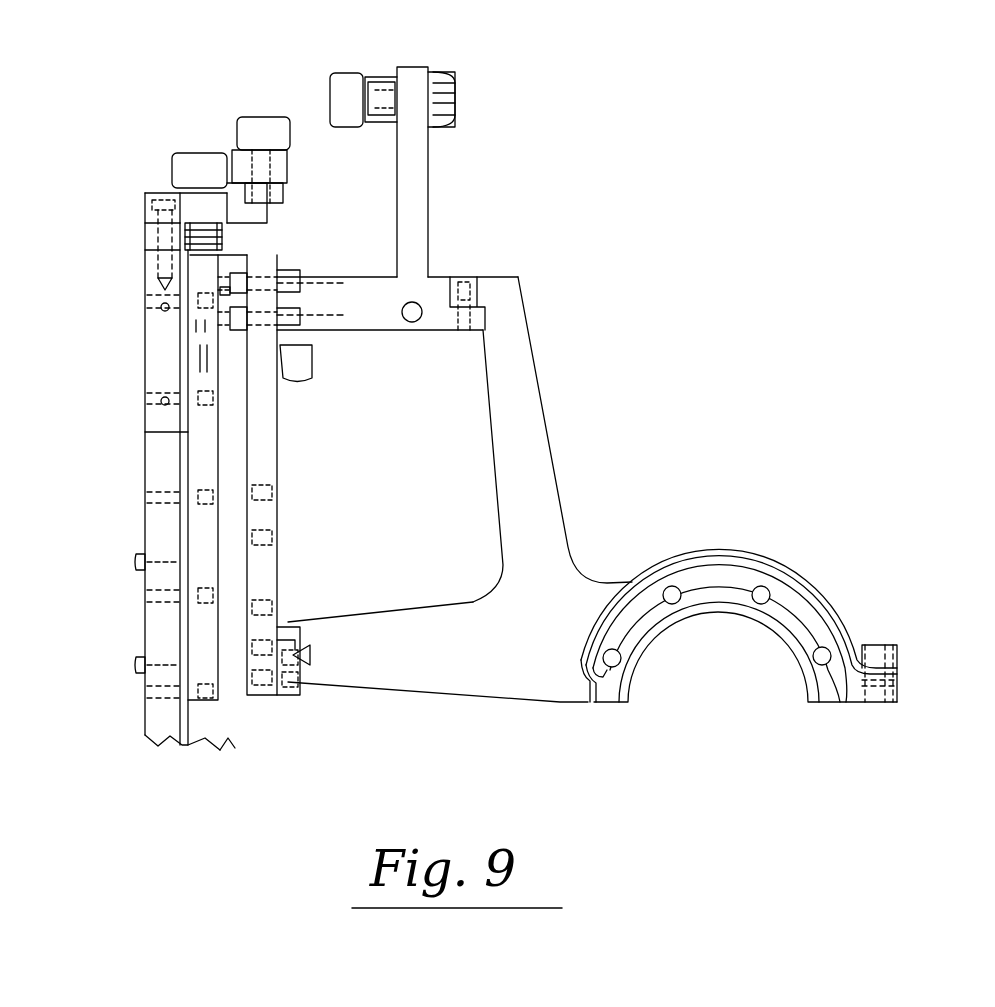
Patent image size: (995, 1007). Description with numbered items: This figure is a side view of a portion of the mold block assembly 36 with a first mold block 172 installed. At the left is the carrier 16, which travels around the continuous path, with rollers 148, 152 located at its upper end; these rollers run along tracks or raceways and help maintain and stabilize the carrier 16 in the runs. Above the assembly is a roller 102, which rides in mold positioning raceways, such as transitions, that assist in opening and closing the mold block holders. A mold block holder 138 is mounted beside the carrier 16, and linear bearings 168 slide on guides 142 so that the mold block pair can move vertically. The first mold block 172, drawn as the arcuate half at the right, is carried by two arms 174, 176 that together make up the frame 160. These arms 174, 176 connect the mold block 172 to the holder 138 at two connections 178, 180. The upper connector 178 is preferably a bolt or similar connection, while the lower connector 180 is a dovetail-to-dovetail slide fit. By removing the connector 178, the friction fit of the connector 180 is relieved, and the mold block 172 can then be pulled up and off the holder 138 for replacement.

The carrier 16 is at (158, 540).
The mold block assembly 36 is at (486, 190).
The roller 102 is at (350, 82).
The mold block holder 138 is at (255, 443).
The guide 142 is at (225, 728).
The roller 148 is at (185, 162).
The roller 152 is at (254, 130).
The frame 160 is at (572, 460).
The linear bearing 168 is at (188, 332).
The first mold block 172 is at (762, 553).
The arm 174 is at (515, 372).
The arm 176 is at (410, 648).
The connector 178 is at (465, 280).
The connector 180 is at (300, 657).